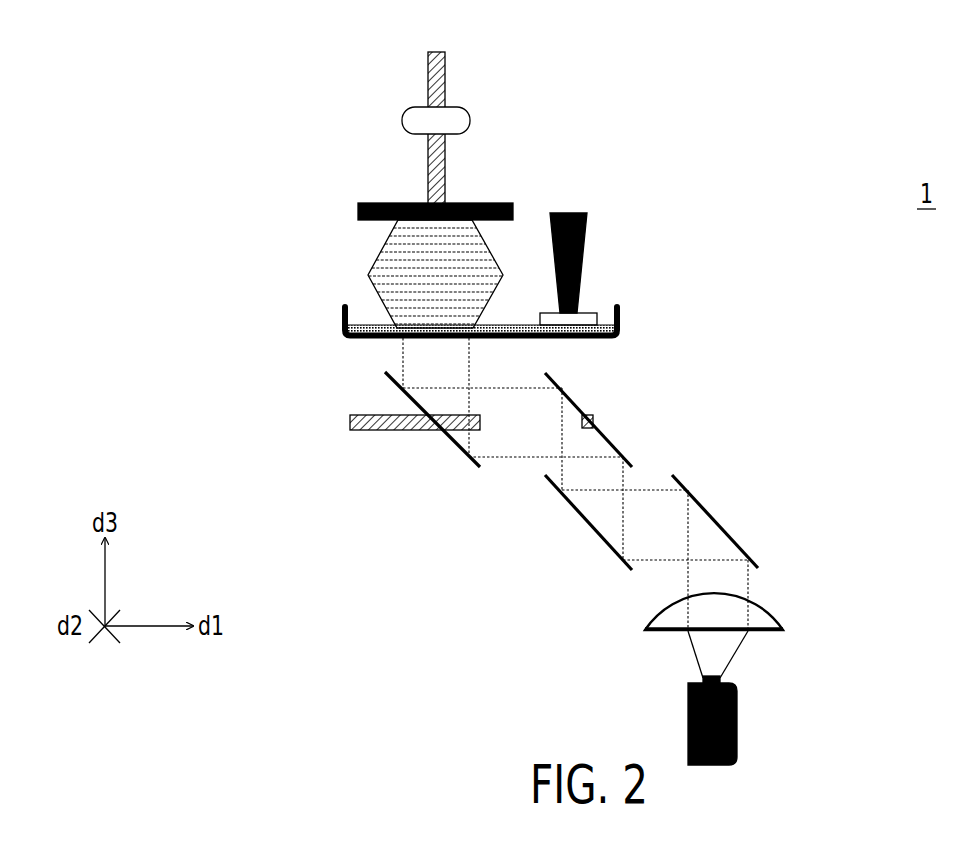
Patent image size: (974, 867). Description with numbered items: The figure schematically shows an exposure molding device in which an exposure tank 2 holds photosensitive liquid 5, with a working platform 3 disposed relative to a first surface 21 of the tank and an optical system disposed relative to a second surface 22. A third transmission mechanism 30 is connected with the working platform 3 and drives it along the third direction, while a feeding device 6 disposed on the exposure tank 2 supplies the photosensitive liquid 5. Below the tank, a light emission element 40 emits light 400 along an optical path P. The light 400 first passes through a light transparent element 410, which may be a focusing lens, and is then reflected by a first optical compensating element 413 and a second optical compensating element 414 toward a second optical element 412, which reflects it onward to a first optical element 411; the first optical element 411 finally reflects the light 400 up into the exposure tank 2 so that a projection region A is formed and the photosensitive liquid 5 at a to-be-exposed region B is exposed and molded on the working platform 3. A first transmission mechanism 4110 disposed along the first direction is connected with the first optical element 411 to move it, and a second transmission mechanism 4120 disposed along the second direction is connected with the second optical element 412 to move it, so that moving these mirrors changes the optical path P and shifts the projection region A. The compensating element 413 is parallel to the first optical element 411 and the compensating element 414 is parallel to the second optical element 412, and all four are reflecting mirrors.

The exposure tank 2 is at (618, 307).
The working platform 3 is at (487, 203).
The photosensitive liquid 5 is at (614, 333).
The feeding device 6 is at (568, 213).
The first surface 21 is at (363, 328).
The second surface 22 is at (365, 343).
The third transmission mechanism 30 is at (443, 72).
The light emission element 40 is at (738, 722).
The light 400 is at (732, 665).
The light transparent element 410 is at (775, 625).
The first optical element 411 is at (460, 447).
The second optical element 412 is at (600, 438).
The first optical compensating element 413 is at (715, 520).
The second optical compensating element 414 is at (598, 535).
The first transmission mechanism 4110 is at (350, 420).
The second transmission mechanism 4120 is at (590, 418).
The projection region A is at (437, 340).
The to-be-exposed region B is at (418, 340).
The optical path P is at (515, 408).